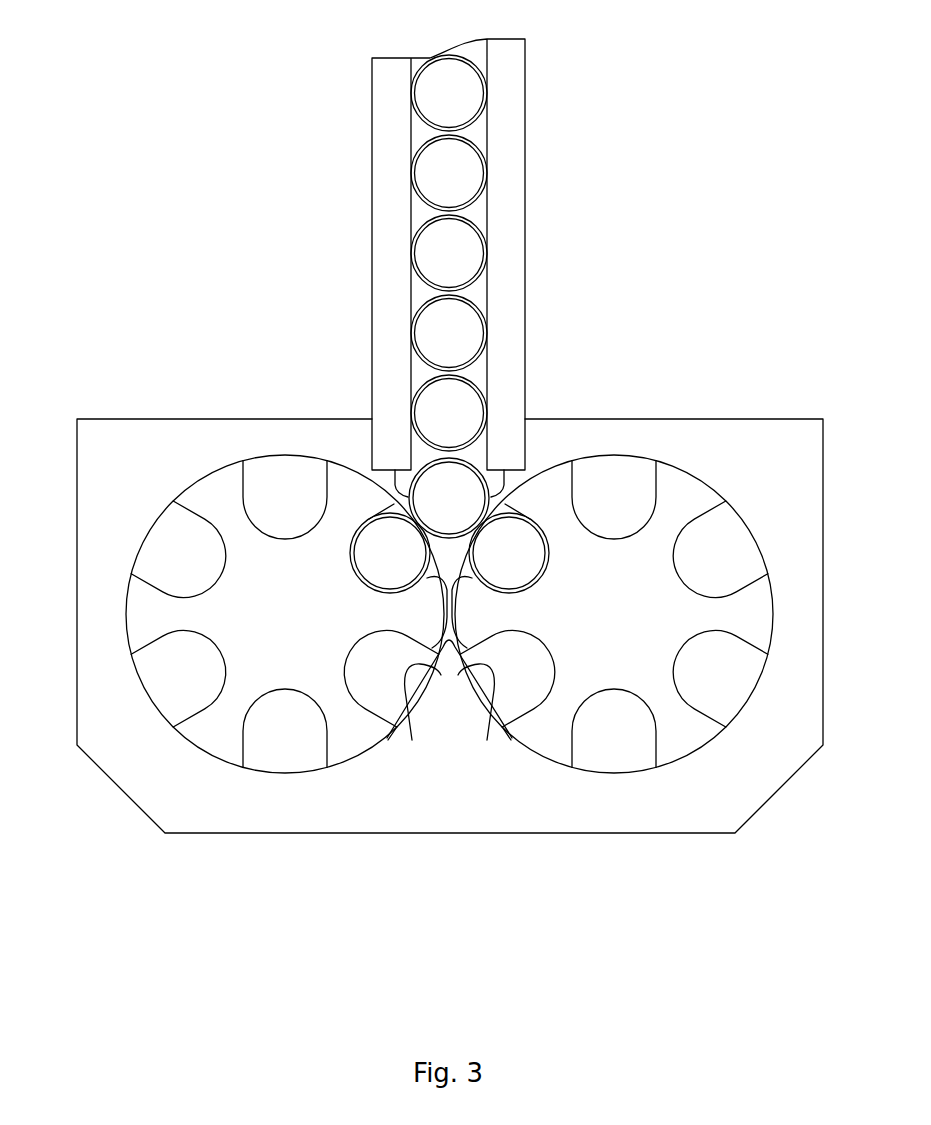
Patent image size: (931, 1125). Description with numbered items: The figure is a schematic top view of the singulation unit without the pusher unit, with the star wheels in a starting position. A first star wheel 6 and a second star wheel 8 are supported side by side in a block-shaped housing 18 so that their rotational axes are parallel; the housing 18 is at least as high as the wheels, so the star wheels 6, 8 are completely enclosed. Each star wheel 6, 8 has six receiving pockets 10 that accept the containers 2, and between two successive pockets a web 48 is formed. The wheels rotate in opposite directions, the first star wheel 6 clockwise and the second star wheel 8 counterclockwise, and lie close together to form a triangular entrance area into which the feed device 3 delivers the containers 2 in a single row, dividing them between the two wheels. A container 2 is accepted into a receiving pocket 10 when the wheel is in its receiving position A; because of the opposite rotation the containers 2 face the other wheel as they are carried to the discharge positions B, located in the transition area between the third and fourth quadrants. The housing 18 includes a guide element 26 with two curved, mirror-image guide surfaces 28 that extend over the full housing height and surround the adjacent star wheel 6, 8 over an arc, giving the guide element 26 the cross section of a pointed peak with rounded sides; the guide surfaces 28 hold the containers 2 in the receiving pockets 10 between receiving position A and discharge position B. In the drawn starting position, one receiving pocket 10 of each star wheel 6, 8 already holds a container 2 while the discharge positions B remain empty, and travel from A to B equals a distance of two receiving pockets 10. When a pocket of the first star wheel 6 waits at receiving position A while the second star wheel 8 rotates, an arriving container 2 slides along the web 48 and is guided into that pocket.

The container 2 is at (470, 330).
The feed device 3 is at (385, 177).
The first star wheel 6 is at (276, 616).
The second star wheel 8 is at (628, 614).
The receiving pocket 10 is at (172, 572).
The housing 18 is at (102, 507).
The guide element 26 is at (452, 688).
The guide surface 28 is at (403, 690).
The web 48 is at (224, 725).
The receiving position A is at (388, 542).
The discharge position B is at (288, 747).